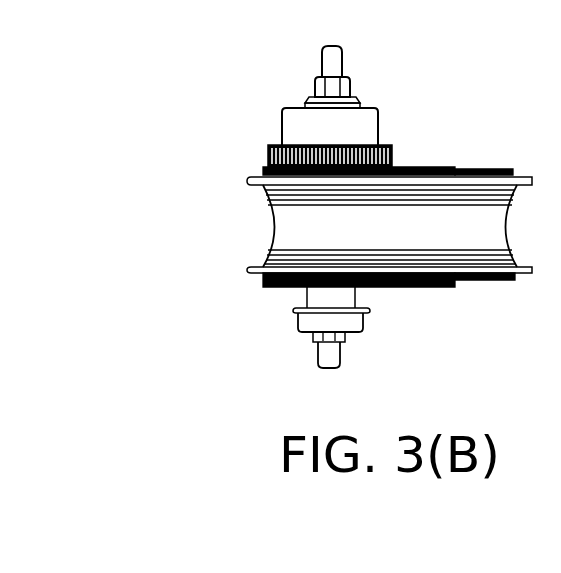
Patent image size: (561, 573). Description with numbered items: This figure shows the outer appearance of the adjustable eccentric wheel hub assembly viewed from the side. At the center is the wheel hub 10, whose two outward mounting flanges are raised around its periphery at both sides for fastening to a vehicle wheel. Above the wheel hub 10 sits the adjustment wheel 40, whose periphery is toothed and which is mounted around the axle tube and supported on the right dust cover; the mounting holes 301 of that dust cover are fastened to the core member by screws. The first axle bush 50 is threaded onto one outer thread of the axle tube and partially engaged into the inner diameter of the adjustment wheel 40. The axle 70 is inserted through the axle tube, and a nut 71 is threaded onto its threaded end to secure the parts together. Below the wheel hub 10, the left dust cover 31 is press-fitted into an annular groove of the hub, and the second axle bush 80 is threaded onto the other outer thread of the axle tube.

The wheel hub 10 is at (268, 203).
The left dust cover 31 is at (452, 288).
The mounting holes 301 is at (435, 165).
The adjustment wheel 40 is at (387, 145).
The first axle bush 50 is at (290, 118).
The axle 70 is at (333, 58).
The nuts 71 is at (316, 80).
The second axle bush 80 is at (308, 300).